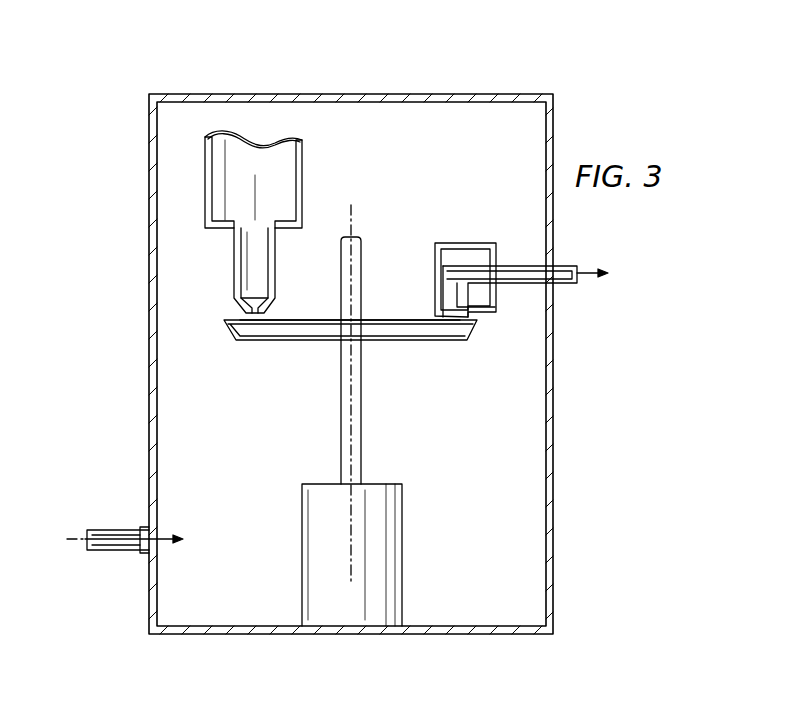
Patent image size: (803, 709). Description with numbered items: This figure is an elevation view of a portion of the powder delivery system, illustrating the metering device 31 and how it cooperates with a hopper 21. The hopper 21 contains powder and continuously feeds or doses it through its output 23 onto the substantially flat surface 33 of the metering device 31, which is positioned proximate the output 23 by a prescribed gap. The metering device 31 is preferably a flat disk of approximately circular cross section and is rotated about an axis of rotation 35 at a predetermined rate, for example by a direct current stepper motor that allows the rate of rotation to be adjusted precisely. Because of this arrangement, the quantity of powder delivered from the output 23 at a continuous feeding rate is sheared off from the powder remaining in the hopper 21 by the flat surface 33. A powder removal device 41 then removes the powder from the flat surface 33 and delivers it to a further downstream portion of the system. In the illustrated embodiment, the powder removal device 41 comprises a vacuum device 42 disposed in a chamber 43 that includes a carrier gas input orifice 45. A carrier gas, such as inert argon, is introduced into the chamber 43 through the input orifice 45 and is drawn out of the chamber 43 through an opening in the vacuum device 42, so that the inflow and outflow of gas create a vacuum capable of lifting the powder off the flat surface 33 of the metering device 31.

The hopper 21 is at (303, 166).
The output 23 is at (222, 292).
The metering device 31 is at (300, 342).
The flat surface 33 is at (318, 318).
The axis of rotation 35 is at (356, 418).
The powder removal device 41 is at (554, 400).
The vacuum device 42 is at (472, 243).
The chamber 43 is at (530, 467).
The carrier gas input orifice 45 is at (110, 553).